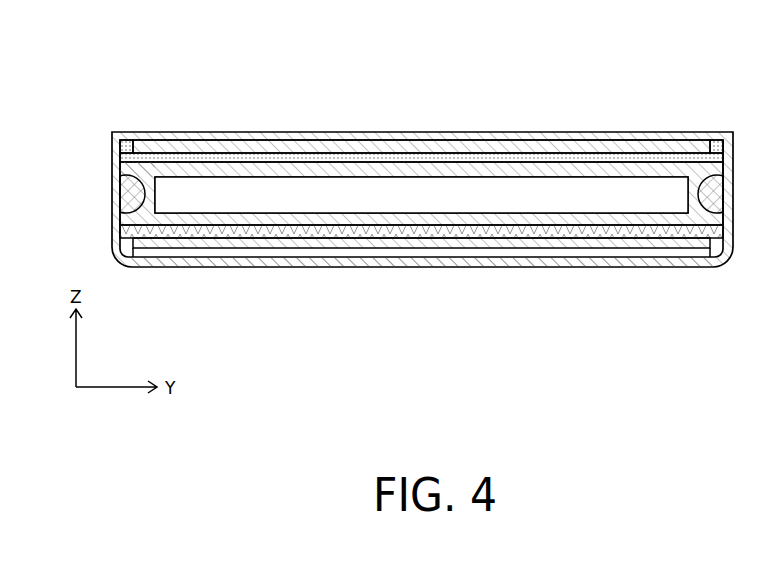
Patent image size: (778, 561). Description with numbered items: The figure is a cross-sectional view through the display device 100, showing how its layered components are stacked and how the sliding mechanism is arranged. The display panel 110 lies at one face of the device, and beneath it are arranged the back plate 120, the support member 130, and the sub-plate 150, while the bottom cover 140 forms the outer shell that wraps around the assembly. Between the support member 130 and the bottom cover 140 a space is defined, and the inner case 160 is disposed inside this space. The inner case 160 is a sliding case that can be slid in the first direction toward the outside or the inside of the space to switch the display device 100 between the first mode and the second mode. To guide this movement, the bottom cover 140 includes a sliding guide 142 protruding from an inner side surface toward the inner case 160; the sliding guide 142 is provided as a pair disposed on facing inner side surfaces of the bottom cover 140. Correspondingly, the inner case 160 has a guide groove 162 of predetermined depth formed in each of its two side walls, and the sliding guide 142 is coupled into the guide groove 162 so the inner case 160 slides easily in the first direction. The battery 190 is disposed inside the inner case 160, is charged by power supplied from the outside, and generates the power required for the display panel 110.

The display device 100 is at (718, 52).
The display panel 110 is at (307, 138).
The back plate 120 is at (368, 145).
The support member 130 is at (441, 158).
The bottom cover 140 is at (228, 262).
The sliding guide 142 is at (132, 193).
The sub-plate 150 is at (460, 232).
The inner case 160 is at (503, 172).
The guide groove 162 is at (132, 165).
The battery 190 is at (556, 190).